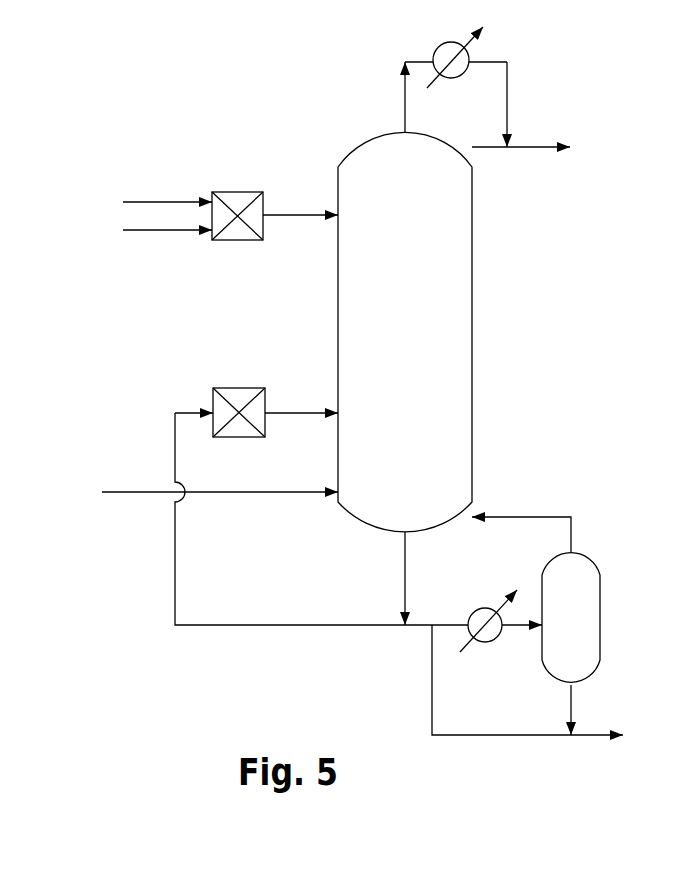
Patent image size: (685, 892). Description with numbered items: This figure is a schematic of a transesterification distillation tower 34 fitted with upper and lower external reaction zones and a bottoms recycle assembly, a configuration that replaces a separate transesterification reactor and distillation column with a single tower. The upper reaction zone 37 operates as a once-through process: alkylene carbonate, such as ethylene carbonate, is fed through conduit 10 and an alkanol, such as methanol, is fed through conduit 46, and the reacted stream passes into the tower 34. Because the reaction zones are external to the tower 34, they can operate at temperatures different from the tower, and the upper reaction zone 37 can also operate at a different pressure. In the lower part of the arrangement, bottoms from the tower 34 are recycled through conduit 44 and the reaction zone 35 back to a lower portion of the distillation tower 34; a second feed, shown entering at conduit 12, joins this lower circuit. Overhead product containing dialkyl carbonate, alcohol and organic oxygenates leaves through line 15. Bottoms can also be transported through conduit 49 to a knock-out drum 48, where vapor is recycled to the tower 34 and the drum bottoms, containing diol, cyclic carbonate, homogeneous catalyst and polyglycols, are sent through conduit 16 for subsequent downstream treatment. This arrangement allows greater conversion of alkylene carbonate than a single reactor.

The conduit 10 is at (158, 202).
The conduit 46 is at (158, 230).
The upper reaction zone 37 is at (237, 192).
The reaction zone 35 is at (240, 388).
The solvent feed line 12 is at (137, 490).
The distillation tower 34 is at (472, 305).
The line 15 is at (533, 145).
The conduit 44 is at (232, 625).
The conduit 49 is at (445, 623).
The knock-out drum 48 is at (600, 602).
The conduit 16 is at (582, 738).